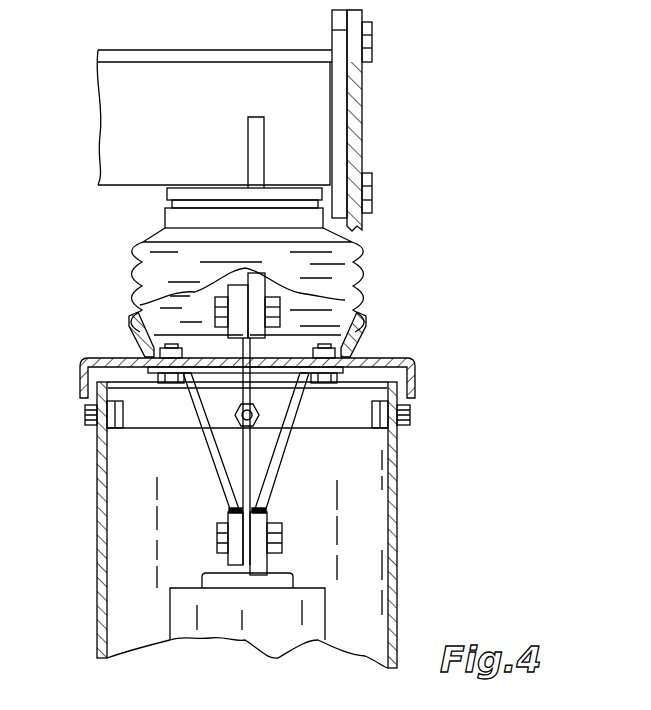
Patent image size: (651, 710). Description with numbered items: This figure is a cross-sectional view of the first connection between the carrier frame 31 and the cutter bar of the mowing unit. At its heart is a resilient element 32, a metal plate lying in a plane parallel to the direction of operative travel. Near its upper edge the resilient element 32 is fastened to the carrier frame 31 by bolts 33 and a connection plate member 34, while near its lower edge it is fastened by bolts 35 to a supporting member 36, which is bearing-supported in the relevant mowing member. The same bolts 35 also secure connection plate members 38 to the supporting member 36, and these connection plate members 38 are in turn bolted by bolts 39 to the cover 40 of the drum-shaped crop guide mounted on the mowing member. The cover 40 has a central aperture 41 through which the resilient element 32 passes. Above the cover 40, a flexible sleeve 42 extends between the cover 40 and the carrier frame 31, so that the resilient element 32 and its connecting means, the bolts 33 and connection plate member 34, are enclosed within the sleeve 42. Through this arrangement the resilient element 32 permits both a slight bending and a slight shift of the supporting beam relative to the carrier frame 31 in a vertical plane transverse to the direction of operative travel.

The carrier frame 31 is at (115, 116).
The connection plate member 34 is at (247, 135).
The flexible sleeve 42 is at (135, 252).
The bolts 33 is at (215, 297).
The cover 40 is at (398, 357).
The central aperture 41 is at (220, 363).
The bolts 39 is at (172, 344).
The resilient element 32 is at (250, 443).
The connection plate members 38 is at (281, 455).
The bolts 35 is at (217, 538).
The supporting member 36 is at (182, 612).